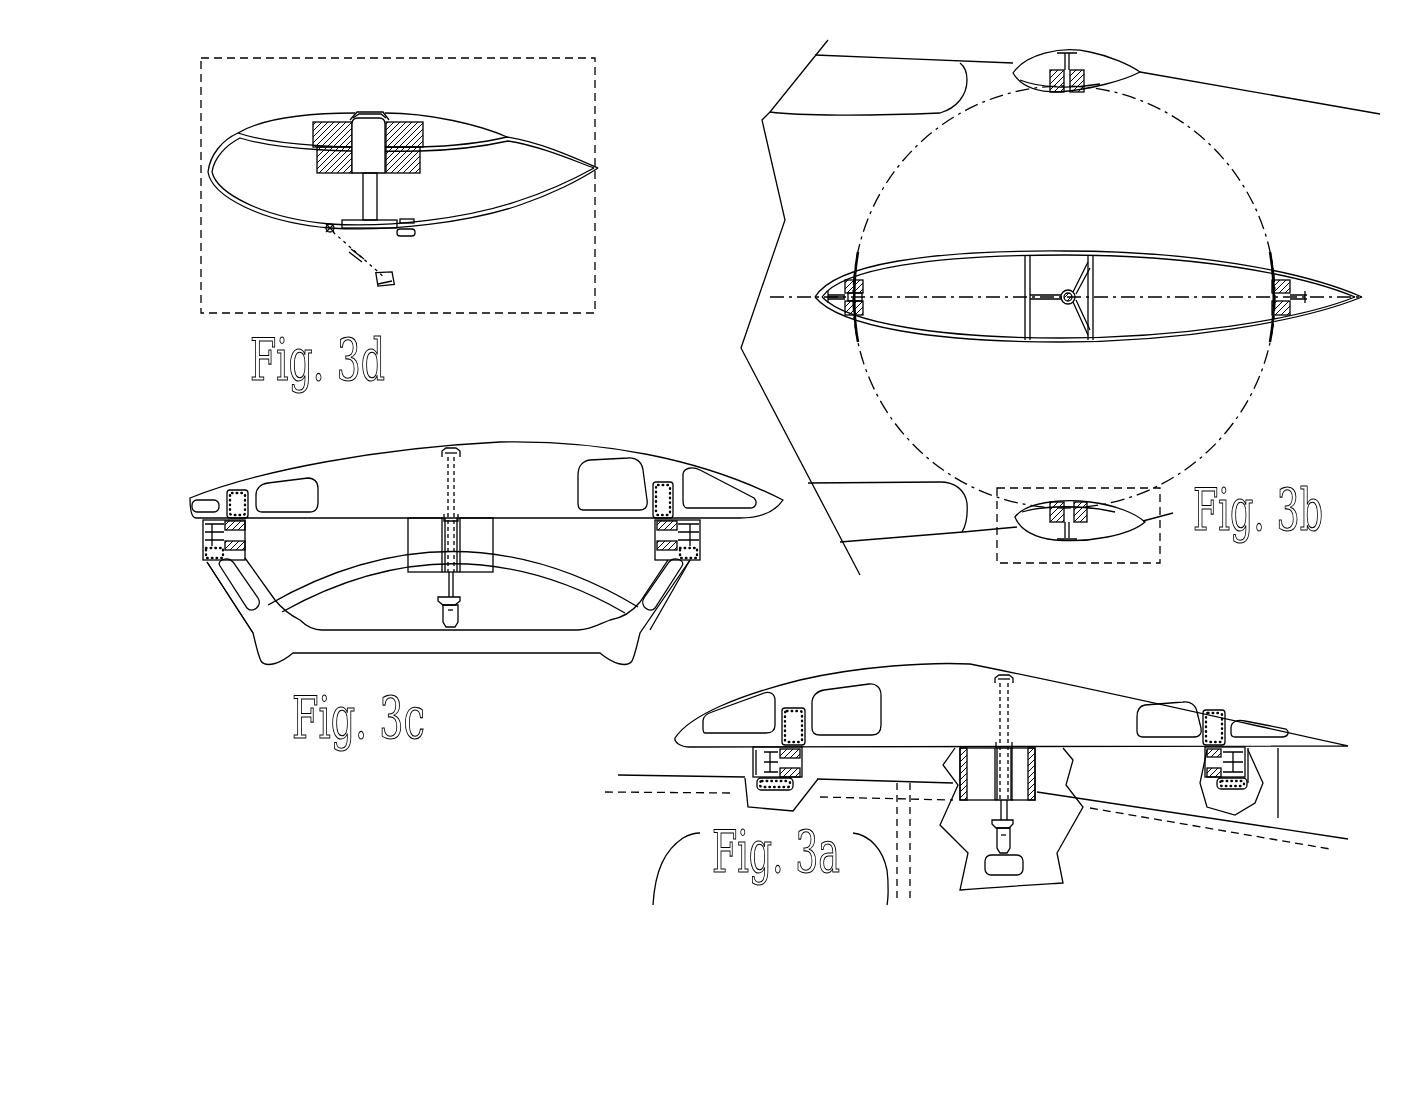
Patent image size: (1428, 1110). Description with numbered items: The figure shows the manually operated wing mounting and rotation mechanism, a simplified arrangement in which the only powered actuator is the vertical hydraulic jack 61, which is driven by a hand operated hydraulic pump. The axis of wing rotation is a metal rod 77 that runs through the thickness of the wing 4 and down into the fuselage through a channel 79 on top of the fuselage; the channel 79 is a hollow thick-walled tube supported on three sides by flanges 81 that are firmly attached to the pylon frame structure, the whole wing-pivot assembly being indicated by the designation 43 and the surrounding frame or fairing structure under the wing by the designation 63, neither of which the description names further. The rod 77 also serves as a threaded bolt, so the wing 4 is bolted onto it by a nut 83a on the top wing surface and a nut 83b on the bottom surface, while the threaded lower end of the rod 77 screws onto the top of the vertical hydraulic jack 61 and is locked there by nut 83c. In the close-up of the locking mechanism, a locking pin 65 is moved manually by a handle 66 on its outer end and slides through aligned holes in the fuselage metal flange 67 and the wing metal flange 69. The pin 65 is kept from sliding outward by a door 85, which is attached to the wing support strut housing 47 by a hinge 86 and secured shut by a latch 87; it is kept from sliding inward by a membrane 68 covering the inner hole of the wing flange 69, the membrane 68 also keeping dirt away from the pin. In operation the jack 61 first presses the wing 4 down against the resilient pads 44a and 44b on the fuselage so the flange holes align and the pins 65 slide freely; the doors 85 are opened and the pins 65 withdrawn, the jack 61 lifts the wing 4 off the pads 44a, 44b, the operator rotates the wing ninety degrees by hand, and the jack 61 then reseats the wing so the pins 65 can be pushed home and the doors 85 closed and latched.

In FIG. 3C, the wing 4 is at (585, 453).
In FIG. 3A, the wing 4 is at (1107, 698).
In FIG. 3B, the rotor housing assembly 43 is at (948, 365).
In FIG. 3C, the resilient pad 44a is at (417, 521).
In FIG. 3A, the resilient pad 44a is at (933, 747).
In FIG. 3C, the resilient pad 44b is at (699, 520).
In FIG. 3A, the resilient pad 44b is at (1239, 782).
In FIG. 3D, the wing support strut housing 47 is at (265, 239).
In FIG. 3C, the wing support strut housing 47 is at (648, 574).
In FIG. 3B, the wing support strut housing 47 is at (1032, 547).
In FIG. 3C, the vertical hydraulic jack 61 is at (461, 612).
In FIG. 3A, the vertical hydraulic jack 61 is at (1010, 838).
In FIG. 3C, the fairing / frame 63 is at (487, 647).
In FIG. 3A, the fairing / frame 63 is at (1027, 865).
In FIG. 3D, the locking pin 65 is at (372, 120).
In FIG. 3D, the handle 66 is at (387, 221).
In FIG. 3D, the metal flange 67 is at (423, 157).
In FIG. 3D, the membrane 68 is at (367, 114).
In FIG. 3D, the wing metal flange 69 is at (410, 127).
In FIG. 3C, the metal rod 77 is at (453, 480).
In FIG. 3B, the metal rod 77 is at (1078, 296).
In FIG. 3A, the metal rod 77 is at (1008, 707).
In FIG. 3B, the channel 79 is at (1054, 303).
In FIG. 3C, the flanges 81 is at (427, 542).
In FIG. 3B, the flanges 81 is at (1043, 292).
In FIG. 3A, the flanges 81 is at (980, 767).
In FIG. 3C, the nut 83a is at (462, 455).
In FIG. 3A, the nut 83a is at (1010, 677).
In FIG. 3C, the nut 83b is at (457, 520).
In FIG. 3A, the nut 83b is at (1012, 742).
In FIG. 3C, the nut 83c is at (461, 601).
In FIG. 3A, the nut 83c is at (1013, 828).
In FIG. 3D, the door 85 is at (360, 265).
In FIG. 3D, the hinge 86 is at (330, 232).
In FIG. 3D, the latch 87 is at (412, 233).